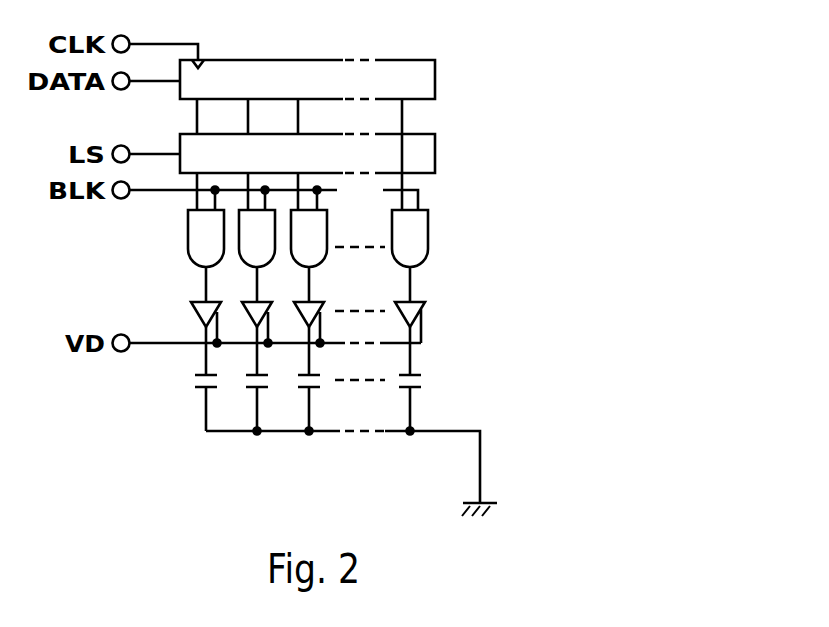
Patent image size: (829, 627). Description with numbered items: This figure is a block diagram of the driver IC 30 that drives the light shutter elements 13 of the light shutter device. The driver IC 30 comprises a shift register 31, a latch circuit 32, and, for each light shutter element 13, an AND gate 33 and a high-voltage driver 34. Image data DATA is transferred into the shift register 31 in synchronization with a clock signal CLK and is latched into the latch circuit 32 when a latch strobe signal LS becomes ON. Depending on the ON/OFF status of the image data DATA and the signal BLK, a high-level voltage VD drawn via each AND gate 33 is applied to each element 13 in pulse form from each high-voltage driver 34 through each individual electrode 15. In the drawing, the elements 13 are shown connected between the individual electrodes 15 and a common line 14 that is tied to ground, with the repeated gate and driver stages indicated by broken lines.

The driver IC 30 is at (321, 21).
The shift register 31 is at (410, 60).
The latch circuit 32 is at (418, 134).
The AND gate 33 is at (188, 240).
The high-voltage driver 34 is at (200, 313).
The individual electrode 15 is at (206, 359).
The light shutter element 13 is at (192, 373).
The common electrode 14 is at (218, 432).